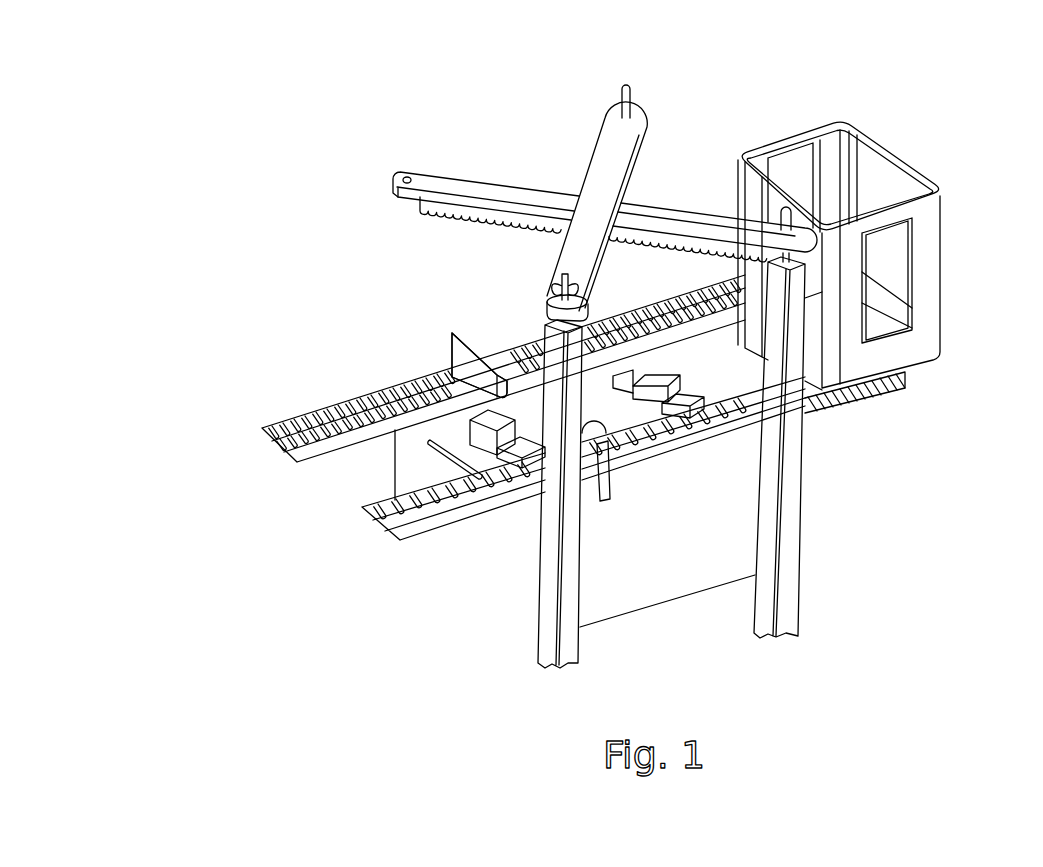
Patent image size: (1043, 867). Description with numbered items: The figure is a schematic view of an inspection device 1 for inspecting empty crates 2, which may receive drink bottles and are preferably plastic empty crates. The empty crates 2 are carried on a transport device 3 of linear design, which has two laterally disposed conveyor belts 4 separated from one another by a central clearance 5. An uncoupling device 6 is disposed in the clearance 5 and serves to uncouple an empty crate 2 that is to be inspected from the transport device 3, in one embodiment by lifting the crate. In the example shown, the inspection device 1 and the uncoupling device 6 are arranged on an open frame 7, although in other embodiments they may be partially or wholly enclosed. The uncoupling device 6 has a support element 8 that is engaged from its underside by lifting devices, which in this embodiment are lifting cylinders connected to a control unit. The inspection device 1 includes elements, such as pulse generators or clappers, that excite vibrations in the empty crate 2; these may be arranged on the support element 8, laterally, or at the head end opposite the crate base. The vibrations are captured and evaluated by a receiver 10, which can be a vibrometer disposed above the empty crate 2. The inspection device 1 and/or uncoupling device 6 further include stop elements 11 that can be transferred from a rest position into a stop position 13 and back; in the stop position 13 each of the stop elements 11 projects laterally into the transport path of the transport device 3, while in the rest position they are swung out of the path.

The inspection device 1 is at (362, 336).
The empty crate 2 is at (906, 168).
The transport device 3 is at (873, 408).
The conveyor belts 4 is at (265, 430).
The central clearance 5 is at (343, 477).
The uncoupling device 6 is at (664, 352).
The open frame 7 is at (541, 629).
The support element 8 is at (698, 416).
The receiver 10 is at (597, 175).
The stop elements 11 is at (459, 338).
The stop position 13 is at (479, 365).